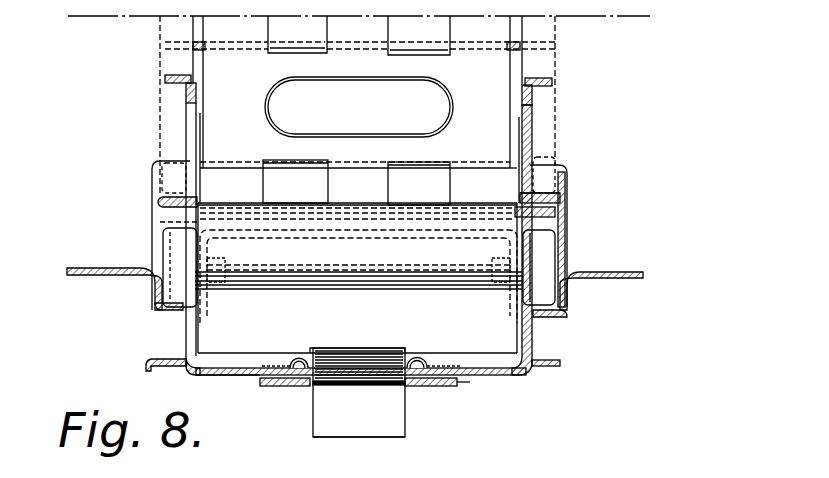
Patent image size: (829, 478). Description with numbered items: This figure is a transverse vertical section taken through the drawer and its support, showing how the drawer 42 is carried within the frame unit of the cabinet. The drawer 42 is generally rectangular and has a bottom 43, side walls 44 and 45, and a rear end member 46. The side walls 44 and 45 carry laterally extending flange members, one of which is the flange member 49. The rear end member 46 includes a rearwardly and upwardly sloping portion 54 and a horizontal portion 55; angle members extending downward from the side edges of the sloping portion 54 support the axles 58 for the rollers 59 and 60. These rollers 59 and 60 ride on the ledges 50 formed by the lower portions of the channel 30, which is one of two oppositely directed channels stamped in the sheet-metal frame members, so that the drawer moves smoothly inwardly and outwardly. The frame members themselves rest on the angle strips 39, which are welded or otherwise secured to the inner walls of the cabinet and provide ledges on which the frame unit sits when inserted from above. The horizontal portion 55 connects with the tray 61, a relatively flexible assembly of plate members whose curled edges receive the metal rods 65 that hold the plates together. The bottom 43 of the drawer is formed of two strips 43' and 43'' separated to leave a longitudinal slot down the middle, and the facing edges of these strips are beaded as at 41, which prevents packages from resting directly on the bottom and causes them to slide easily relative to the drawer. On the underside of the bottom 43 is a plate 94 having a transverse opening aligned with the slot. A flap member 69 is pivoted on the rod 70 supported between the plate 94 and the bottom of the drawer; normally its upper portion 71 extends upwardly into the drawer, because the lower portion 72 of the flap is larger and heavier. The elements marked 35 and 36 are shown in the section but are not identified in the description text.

The channel 30 is at (158, 218).
The left tube wall 35 is at (178, 61).
The right tube wall 36 is at (545, 117).
The angle strip 39 is at (97, 275).
The bead 41 is at (290, 350).
The drawer 42 is at (525, 372).
The bottom 43 is at (340, 402).
The strip 43' is at (486, 393).
The strip 43'' is at (204, 393).
The side wall 44 is at (200, 335).
The side wall 45 is at (522, 340).
The rear end member 46 is at (163, 370).
The flange member 49 is at (562, 362).
The ledge 50 is at (170, 318).
The sloping portion 54 is at (550, 193).
The horizontal portion 55 is at (488, 188).
The axle 58 is at (223, 268).
The roller 59 is at (175, 247).
The roller 60 is at (543, 247).
The tray 61 is at (376, 95).
The metal rod 65 is at (520, 43).
The flap member 69 is at (323, 400).
The rod 70 is at (380, 381).
The upper portion of flap 71 is at (310, 353).
The lower portion of flap 72 is at (317, 427).
The plate 94 is at (263, 380).